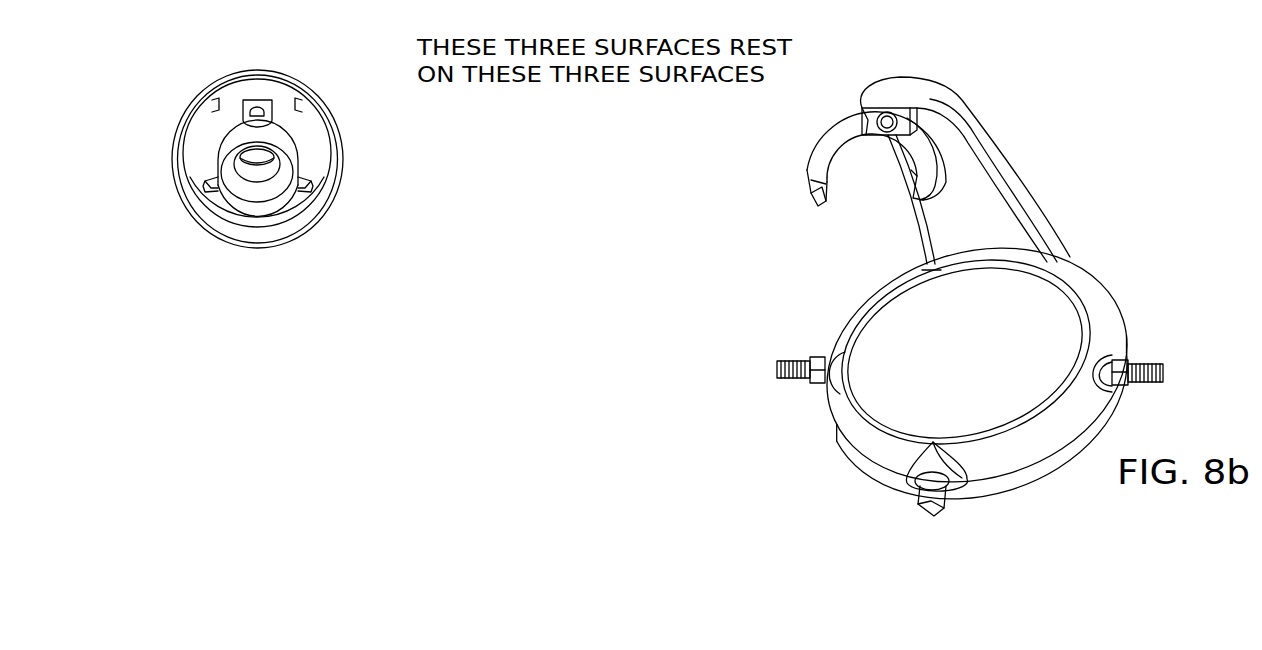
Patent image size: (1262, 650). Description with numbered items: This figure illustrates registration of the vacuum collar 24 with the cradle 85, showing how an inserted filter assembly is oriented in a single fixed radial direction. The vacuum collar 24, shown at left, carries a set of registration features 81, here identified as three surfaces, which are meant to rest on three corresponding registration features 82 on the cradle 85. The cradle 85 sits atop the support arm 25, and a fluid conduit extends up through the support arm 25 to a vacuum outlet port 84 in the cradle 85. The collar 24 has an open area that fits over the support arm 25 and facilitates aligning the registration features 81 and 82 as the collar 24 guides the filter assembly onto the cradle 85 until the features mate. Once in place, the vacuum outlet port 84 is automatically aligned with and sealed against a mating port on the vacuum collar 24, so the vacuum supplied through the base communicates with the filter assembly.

The vacuum collar 24 is at (259, 80).
The registration features 81 is at (221, 181).
The registration features 82 is at (917, 177).
The vacuum outlet port 84 is at (886, 111).
The cradle 85 is at (852, 189).
The support arm 25 is at (1013, 163).